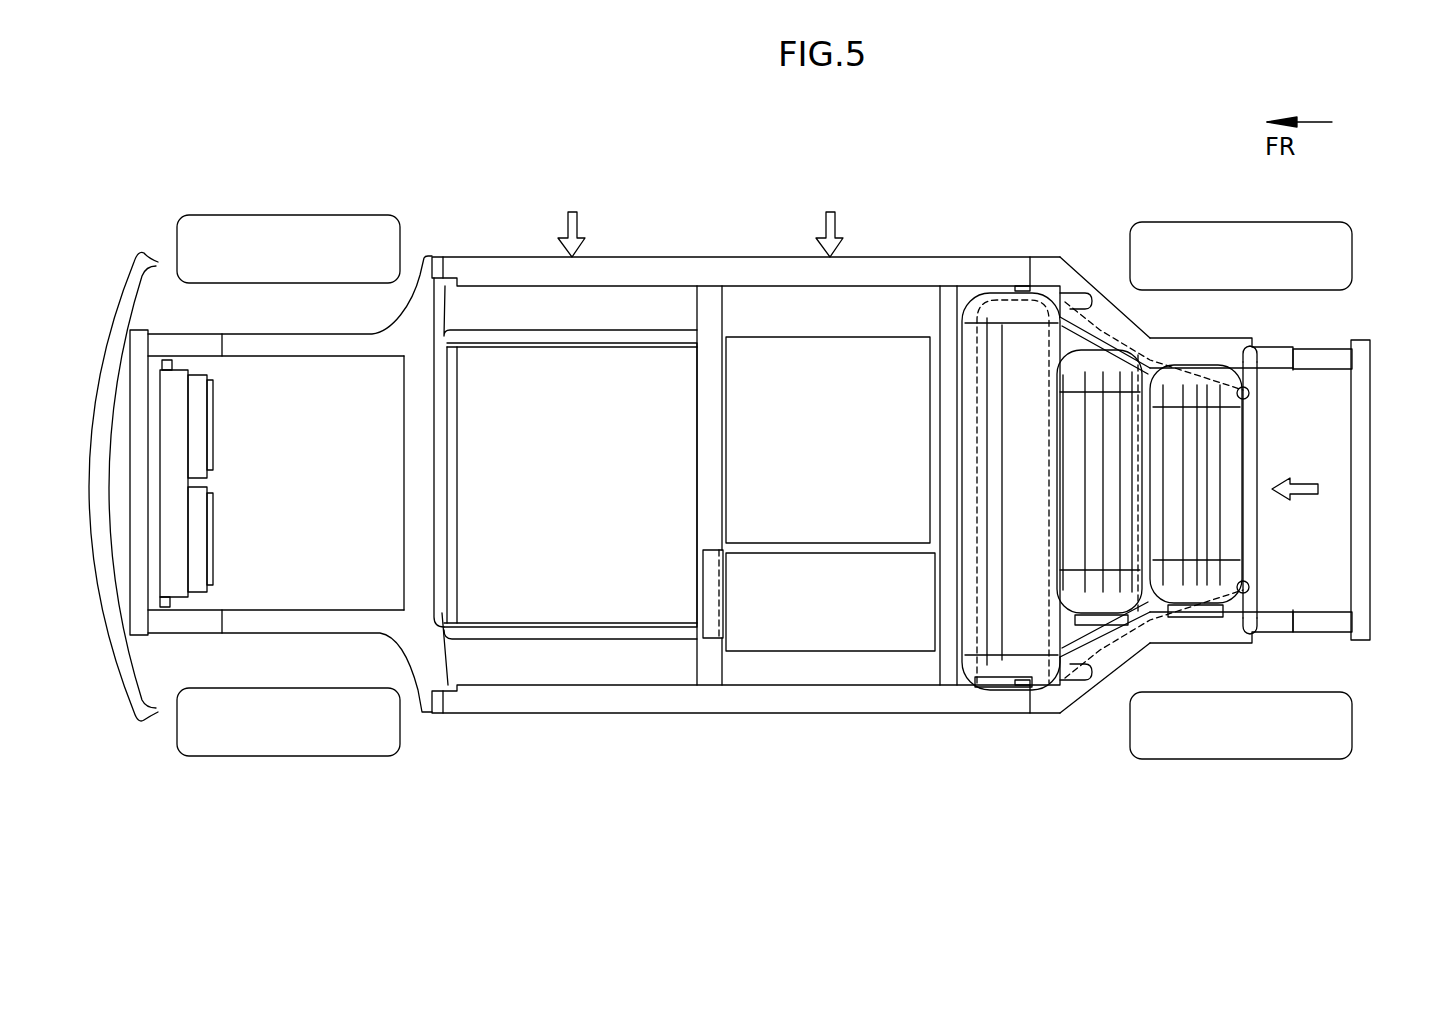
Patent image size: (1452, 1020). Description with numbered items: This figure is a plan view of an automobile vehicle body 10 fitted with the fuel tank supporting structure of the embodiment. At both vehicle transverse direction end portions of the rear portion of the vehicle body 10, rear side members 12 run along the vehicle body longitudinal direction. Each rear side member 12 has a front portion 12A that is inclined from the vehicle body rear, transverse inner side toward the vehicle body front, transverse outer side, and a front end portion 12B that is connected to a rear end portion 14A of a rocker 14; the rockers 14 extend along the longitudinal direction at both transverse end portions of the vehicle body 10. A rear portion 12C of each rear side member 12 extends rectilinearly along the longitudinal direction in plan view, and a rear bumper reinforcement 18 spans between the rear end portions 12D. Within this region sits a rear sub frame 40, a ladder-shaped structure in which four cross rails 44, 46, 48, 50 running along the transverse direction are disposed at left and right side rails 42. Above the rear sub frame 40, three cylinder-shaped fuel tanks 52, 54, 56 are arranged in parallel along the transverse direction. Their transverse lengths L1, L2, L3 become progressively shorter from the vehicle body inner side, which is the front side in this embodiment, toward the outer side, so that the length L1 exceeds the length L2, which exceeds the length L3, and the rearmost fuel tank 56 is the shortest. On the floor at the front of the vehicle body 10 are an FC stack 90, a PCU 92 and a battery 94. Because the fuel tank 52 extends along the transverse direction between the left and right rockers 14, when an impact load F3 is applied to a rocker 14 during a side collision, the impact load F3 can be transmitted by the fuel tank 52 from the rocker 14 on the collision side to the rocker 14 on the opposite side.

The vehicle body 10 is at (938, 236).
The rear side member 12 is at (1215, 177).
The front portion of rear side member 12A is at (1088, 262).
The front end portion of rear side member 12B is at (1047, 277).
The rear portion of rear side member 12C is at (1221, 330).
The rear end portion of rear side member 12D is at (1371, 358).
The rocker 14 is at (853, 717).
The rear end portion of rocker 14A is at (1012, 270).
The rear bumper reinforcement 18 is at (1372, 490).
The rear sub frame 40 is at (1262, 455).
The side rail 42 is at (1085, 335).
The cross rail 44 is at (988, 461).
The cross rail 46 is at (1048, 468).
The cross rail 48 is at (1137, 487).
The cross rail 50 is at (1262, 530).
The fuel tank 52 is at (988, 398).
The fuel tank 54 is at (1077, 422).
The fuel tank 56 is at (1223, 440).
The FC stack 90 is at (580, 603).
The PCU 92 is at (752, 433).
The battery 94 is at (775, 633).
The length of fuel tank L1 is at (997, 597).
The length of fuel tank L2 is at (1088, 487).
The length of fuel tank L3 is at (1197, 468).
The impact load F3 is at (578, 225).